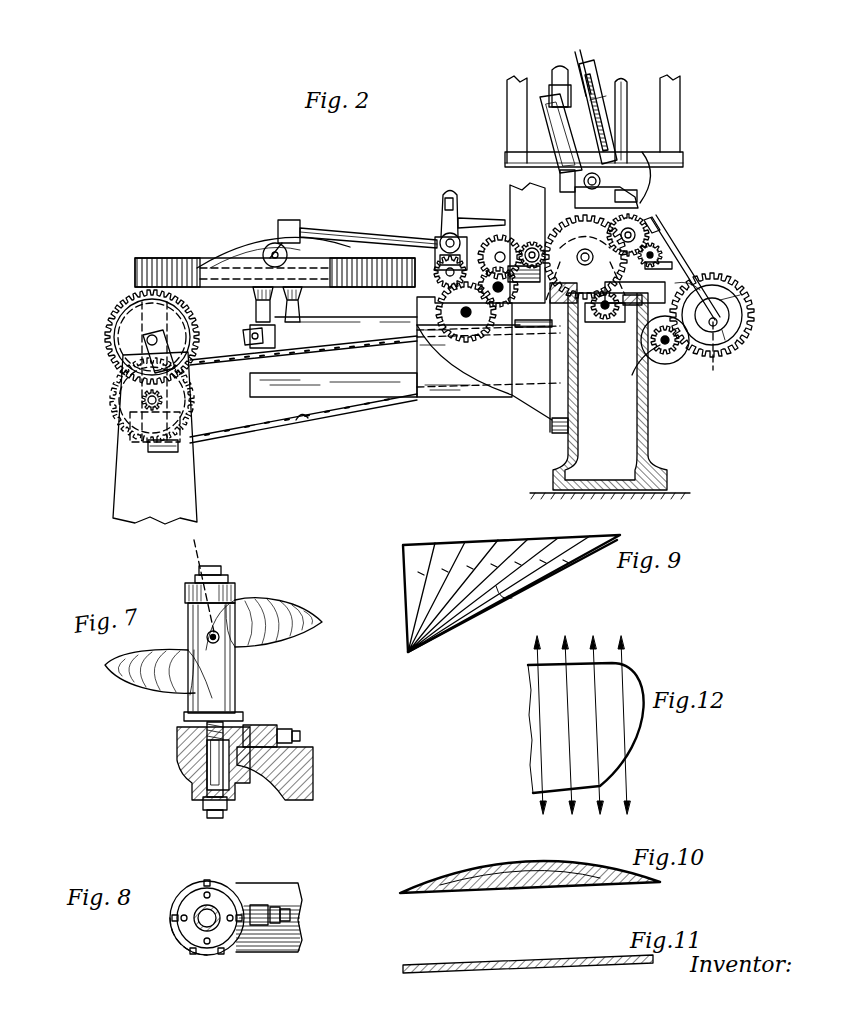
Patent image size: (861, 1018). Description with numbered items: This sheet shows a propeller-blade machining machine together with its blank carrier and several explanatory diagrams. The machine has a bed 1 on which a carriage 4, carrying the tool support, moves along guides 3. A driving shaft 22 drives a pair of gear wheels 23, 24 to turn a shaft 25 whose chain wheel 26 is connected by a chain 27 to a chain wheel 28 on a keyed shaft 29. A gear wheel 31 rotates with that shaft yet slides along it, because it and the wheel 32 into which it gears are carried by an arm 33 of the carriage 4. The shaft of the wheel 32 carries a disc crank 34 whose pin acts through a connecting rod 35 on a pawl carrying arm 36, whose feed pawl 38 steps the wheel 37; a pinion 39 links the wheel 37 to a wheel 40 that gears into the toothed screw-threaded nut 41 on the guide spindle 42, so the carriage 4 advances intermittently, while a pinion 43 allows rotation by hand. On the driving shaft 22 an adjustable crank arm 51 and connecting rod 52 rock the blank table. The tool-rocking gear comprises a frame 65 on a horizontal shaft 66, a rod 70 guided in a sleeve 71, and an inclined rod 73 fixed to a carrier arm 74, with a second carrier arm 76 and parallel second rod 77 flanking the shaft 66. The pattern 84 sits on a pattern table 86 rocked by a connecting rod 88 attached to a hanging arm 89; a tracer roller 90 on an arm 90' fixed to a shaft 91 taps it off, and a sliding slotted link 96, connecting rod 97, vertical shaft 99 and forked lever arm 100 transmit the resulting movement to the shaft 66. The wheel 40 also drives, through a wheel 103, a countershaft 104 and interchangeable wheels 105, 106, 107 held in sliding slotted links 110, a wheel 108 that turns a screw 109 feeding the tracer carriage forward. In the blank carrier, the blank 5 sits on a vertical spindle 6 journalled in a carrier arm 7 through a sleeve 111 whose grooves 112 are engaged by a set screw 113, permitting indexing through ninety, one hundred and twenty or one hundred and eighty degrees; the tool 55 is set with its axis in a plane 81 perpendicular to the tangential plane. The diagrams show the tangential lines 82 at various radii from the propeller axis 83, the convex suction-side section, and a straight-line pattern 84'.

In FIG. 2, the bed 1 is at (648, 425).
In FIG. 2, the guides 3 is at (635, 278).
In FIG. 2, the carriage 4 is at (690, 268).
In FIG. 2, the driving shaft 22 is at (190, 336).
In FIG. 2, the gear wheel 23 is at (197, 316).
In FIG. 2, the gear wheel 24 is at (165, 393).
In FIG. 2, the shaft 25 is at (180, 438).
In FIG. 2, the chain wheel 26 is at (190, 403).
In FIG. 2, the chain 27 is at (355, 345).
In FIG. 2, the chain wheel 28 is at (672, 352).
In FIG. 2, the shaft 29 is at (631, 372).
In FIG. 2, the gear wheel 31 is at (652, 360).
In FIG. 2, the wheel 32 is at (730, 340).
In FIG. 2, the arm 33 is at (710, 270).
In FIG. 2, the disc crank 34 is at (714, 352).
In FIG. 2, the connecting rod 35 is at (735, 300).
In FIG. 2, the pawl carrying arm 36 is at (658, 218).
In FIG. 2, the wheel 37 is at (660, 250).
In FIG. 2, the feed pawl 38 is at (640, 218).
In FIG. 2, the pinion 39 is at (636, 233).
In FIG. 2, the wheel 40 is at (590, 228).
In FIG. 2, the screw-threaded nut 41 is at (600, 320).
In FIG. 2, the guide spindle 42 is at (612, 318).
In FIG. 2, the pinion 43 is at (655, 255).
In FIG. 2, the crank arm 51 is at (142, 440).
In FIG. 2, the connecting rod 52 is at (298, 420).
In FIG. 2, the frame 65 is at (540, 103).
In FIG. 2, the horizontal shaft 66 is at (583, 185).
In FIG. 2, the rod 70 is at (583, 56).
In FIG. 2, the sleeve 71 is at (598, 78).
In FIG. 2, the rod 73 is at (553, 70).
In FIG. 2, the carrier arm 74 is at (512, 88).
In FIG. 2, the second carrier arm 76 is at (665, 96).
In FIG. 2, the second rod 77 is at (628, 122).
In FIG. 2, the pattern 84 is at (273, 247).
In FIG. 2, the pattern table 86 is at (178, 260).
In FIG. 2, the connecting rod 88 is at (232, 352).
In FIG. 2, the arm 89 is at (278, 347).
In FIG. 2, the tracer roller 90 is at (274, 243).
In FIG. 2, the arm 90' is at (368, 226).
In FIG. 2, the shaft 91 is at (440, 238).
In FIG. 2, the sliding slotted link 96 is at (450, 193).
In FIG. 2, the connecting rod 97 is at (520, 215).
In FIG. 2, the vertical shaft 99 is at (635, 208).
In FIG. 2, the lever arm 100 is at (645, 145).
In FIG. 2, the wheel 103 is at (572, 254).
In FIG. 2, the countershaft 104 is at (532, 242).
In FIG. 2, the countershaft wheel 105 is at (500, 255).
In FIG. 2, the countershaft wheel 106 is at (530, 296).
In FIG. 2, the countershaft wheel 107 is at (460, 332).
In FIG. 2, the wheel 108 is at (445, 275).
In FIG. 2, the screw 109 is at (395, 258).
In FIG. 2, the sliding slotted links 110 is at (494, 312).
In FIG. 7, the blank 5 is at (266, 612).
In FIG. 7, the vertical spindle 6 is at (190, 785).
In FIG. 8, the vertical spindle 6 is at (213, 912).
In FIG. 7, the carrier arm 7 is at (296, 768).
In FIG. 8, the carrier arm 7 is at (283, 883).
In FIG. 7, the tool 55 is at (220, 641).
In FIG. 7, the plane 81 is at (200, 548).
In FIG. 7, the sleeve 111 is at (240, 765).
In FIG. 7, the grooves 112 is at (252, 725).
In FIG. 8, the grooves 112 is at (207, 950).
In FIG. 7, the set screw 113 is at (292, 730).
In FIG. 8, the set screw 113 is at (284, 922).
In FIG. 9, the lines 82 is at (515, 596).
In FIG. 9, the axis 83 is at (404, 607).
In FIG. 12, the pattern 84' is at (576, 725).